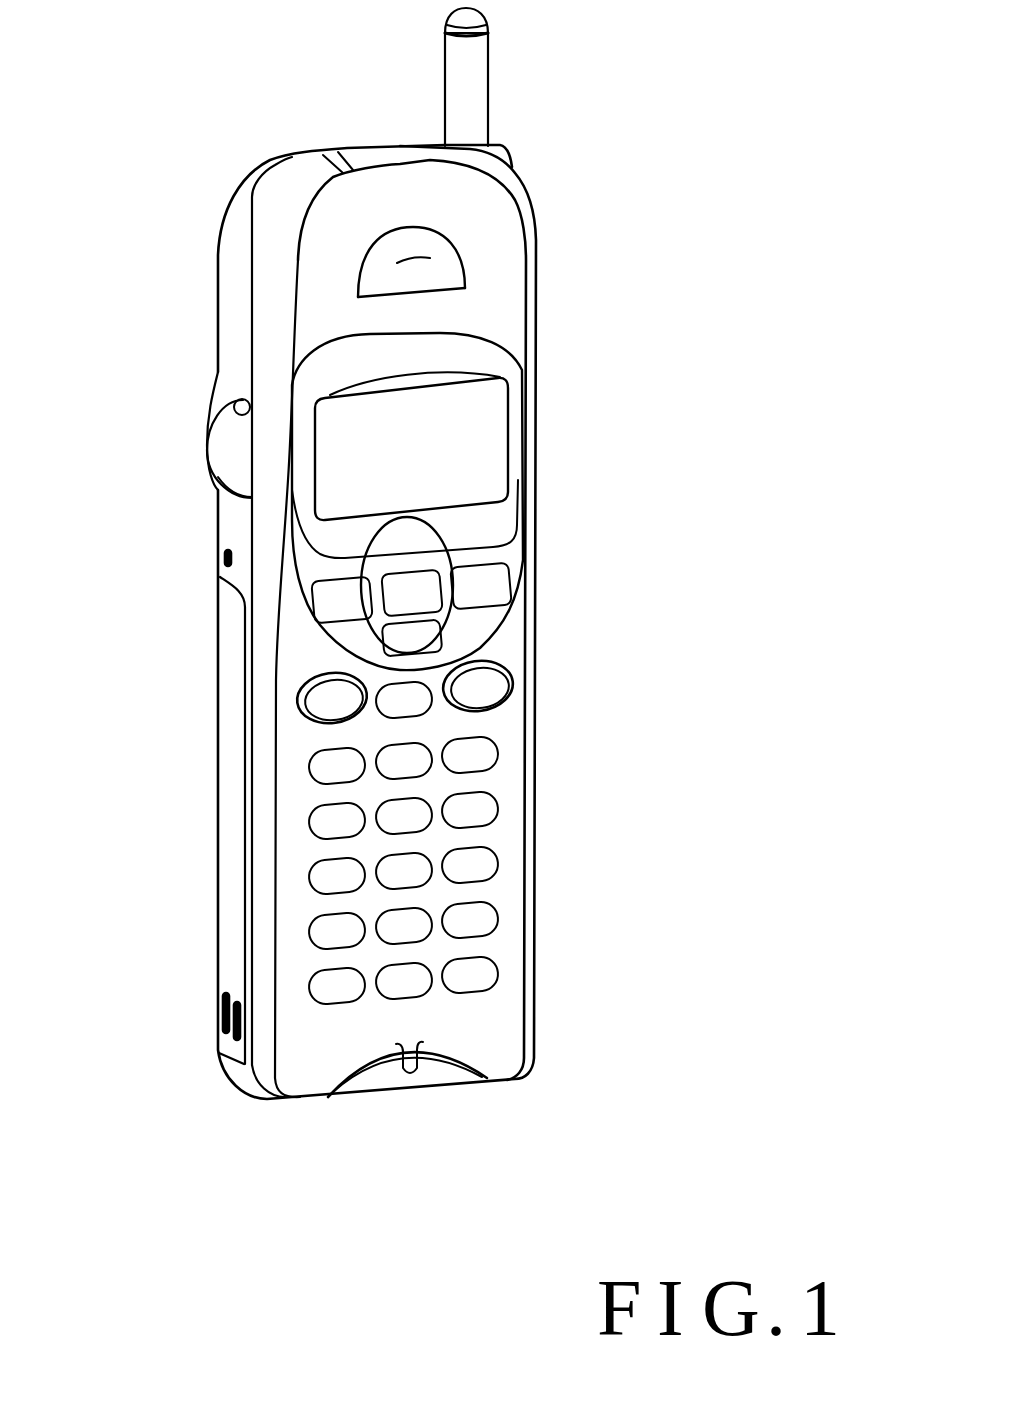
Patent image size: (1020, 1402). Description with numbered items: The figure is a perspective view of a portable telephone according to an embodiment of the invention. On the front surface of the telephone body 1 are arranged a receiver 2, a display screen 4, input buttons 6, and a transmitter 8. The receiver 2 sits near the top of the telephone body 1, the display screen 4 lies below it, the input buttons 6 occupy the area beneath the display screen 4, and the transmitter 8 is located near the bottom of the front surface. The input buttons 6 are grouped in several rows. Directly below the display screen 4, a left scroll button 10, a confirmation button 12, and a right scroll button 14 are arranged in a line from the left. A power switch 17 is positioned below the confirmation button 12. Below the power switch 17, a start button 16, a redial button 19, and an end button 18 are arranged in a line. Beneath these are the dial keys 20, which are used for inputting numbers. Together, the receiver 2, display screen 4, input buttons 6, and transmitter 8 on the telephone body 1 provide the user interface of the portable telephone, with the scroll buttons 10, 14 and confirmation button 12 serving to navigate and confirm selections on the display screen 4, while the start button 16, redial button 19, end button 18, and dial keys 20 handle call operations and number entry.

The telephone body 1 is at (545, 182).
The receiver 2 is at (372, 273).
The display screen 4 is at (477, 415).
The input buttons 6 is at (385, 765).
The transmitter 8 is at (418, 1072).
The left scroll button 10 is at (335, 600).
The confirmation button 12 is at (420, 583).
The right scroll button 14 is at (493, 583).
The start button 16 is at (313, 772).
The power switch 17 is at (398, 707).
The end button 18 is at (487, 750).
The redial button 19 is at (388, 772).
The dial keys 20 is at (459, 898).